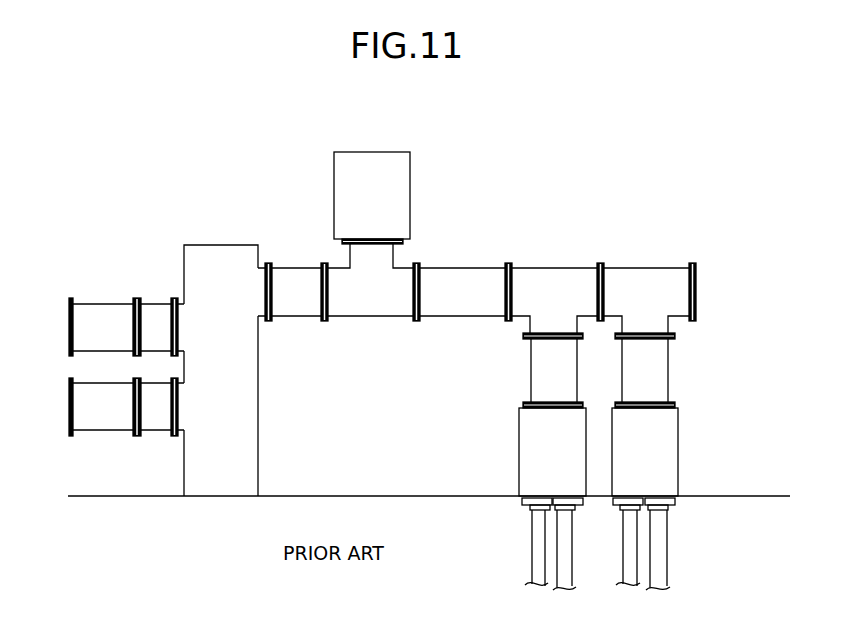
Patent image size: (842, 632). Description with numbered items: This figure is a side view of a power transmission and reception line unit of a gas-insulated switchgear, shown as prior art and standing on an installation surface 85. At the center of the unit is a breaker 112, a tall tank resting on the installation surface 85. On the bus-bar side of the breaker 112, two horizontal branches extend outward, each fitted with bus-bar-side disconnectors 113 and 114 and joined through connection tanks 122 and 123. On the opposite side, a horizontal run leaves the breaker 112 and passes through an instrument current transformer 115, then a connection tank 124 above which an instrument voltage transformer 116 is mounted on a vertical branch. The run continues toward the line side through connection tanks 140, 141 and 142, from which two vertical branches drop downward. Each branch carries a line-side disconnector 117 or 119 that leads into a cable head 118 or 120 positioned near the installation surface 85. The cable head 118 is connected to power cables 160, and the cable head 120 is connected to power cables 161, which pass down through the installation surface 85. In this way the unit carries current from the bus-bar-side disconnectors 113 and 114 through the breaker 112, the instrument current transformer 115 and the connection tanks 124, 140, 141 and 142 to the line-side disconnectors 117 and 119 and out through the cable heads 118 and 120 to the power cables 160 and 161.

The installation surface 85 is at (772, 496).
The breaker 112 is at (260, 405).
The bus-bar-side disconnector 113 is at (92, 383).
The bus-bar-side disconnector 114 is at (103, 304).
The instrument current transformer 115 is at (297, 267).
The instrument voltage transformer 116 is at (377, 151).
The line-side disconnector 117 is at (529, 374).
The cable head 118 is at (519, 454).
The line-side disconnector 119 is at (670, 373).
The cable head 120 is at (679, 454).
The connection tank 122 is at (157, 304).
The connection tank 123 is at (156, 383).
The connection tank 124 is at (365, 316).
The connection tank 140 is at (463, 268).
The connection tank 141 is at (553, 268).
The connection tank 142 is at (647, 268).
The power cables 160 is at (532, 552).
The power cables 161 is at (668, 551).